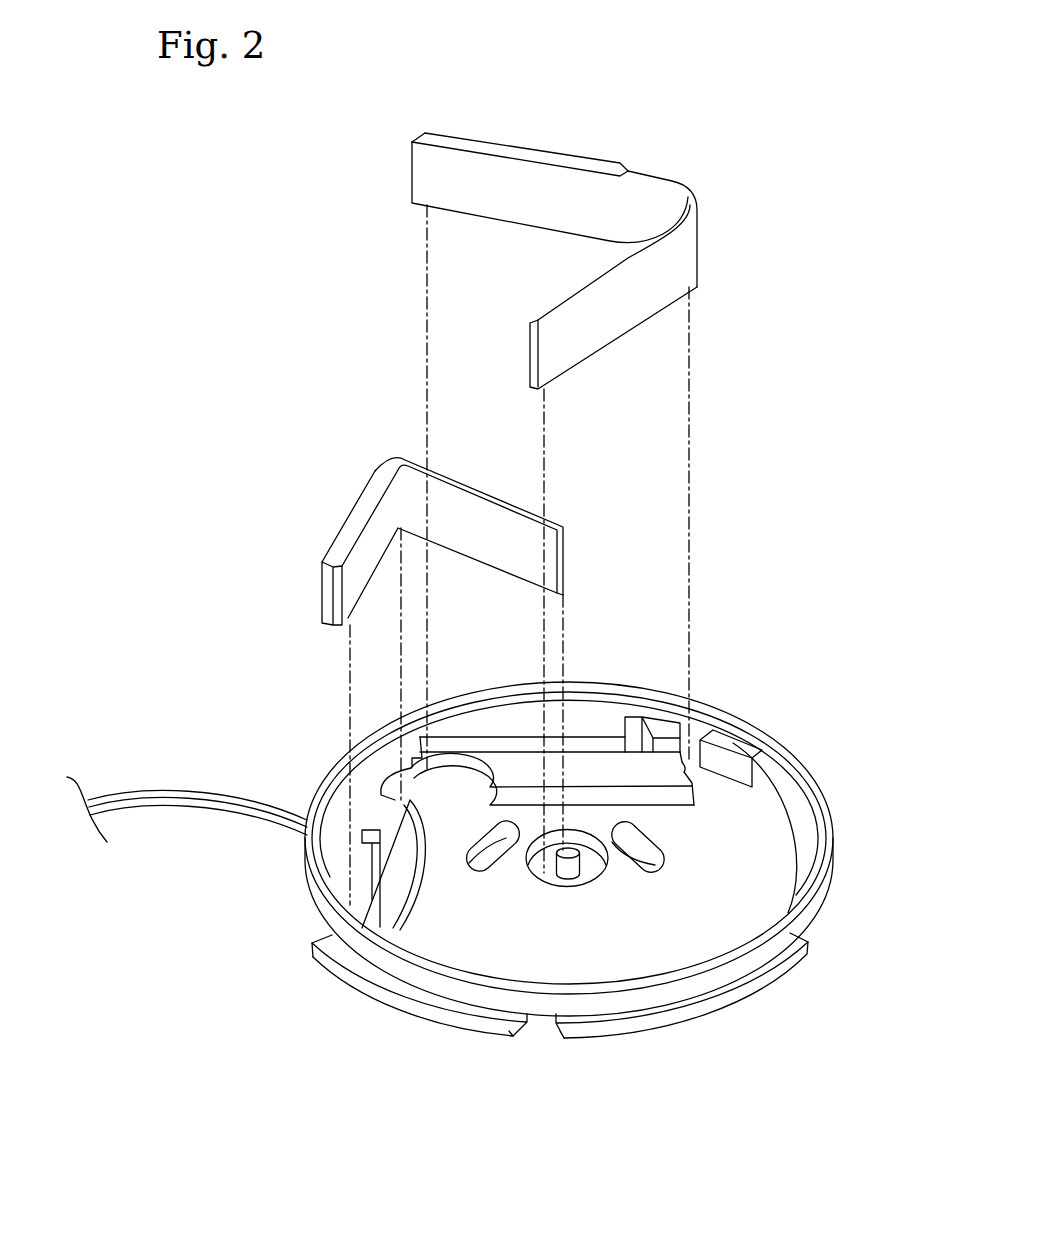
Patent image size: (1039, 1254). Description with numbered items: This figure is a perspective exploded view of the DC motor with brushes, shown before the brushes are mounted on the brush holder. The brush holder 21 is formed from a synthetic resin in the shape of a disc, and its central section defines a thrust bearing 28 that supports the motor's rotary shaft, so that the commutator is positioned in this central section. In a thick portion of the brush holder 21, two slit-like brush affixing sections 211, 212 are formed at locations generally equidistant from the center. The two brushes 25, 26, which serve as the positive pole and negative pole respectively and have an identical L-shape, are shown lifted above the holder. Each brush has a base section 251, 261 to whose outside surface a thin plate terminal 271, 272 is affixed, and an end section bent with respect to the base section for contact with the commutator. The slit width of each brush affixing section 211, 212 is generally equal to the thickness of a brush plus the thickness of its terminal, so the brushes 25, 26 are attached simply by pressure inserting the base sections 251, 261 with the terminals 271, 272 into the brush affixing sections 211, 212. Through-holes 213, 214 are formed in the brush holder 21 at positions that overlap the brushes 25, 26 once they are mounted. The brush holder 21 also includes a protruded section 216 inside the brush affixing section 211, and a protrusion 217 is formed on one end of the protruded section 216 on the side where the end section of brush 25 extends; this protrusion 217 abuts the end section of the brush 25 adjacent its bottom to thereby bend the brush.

The brush holder 21 is at (477, 854).
The brush 25 is at (556, 243).
The base section 251 is at (565, 213).
The terminal 271 is at (602, 163).
The brush 26 is at (412, 527).
The base section 261 is at (368, 532).
The terminal 272 is at (368, 492).
The brush affixing section 211 is at (602, 732).
The brush affixing section 212 is at (388, 853).
The through-hole 213 is at (657, 862).
The through-hole 214 is at (487, 860).
The protruded section 216 is at (758, 962).
The protrusion 217 is at (638, 770).
The thrust bearing 28 is at (580, 875).